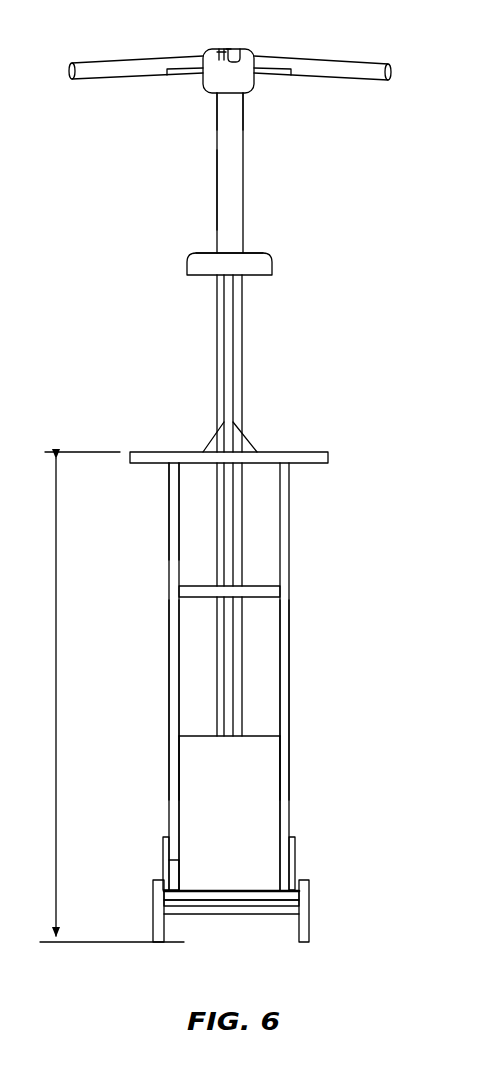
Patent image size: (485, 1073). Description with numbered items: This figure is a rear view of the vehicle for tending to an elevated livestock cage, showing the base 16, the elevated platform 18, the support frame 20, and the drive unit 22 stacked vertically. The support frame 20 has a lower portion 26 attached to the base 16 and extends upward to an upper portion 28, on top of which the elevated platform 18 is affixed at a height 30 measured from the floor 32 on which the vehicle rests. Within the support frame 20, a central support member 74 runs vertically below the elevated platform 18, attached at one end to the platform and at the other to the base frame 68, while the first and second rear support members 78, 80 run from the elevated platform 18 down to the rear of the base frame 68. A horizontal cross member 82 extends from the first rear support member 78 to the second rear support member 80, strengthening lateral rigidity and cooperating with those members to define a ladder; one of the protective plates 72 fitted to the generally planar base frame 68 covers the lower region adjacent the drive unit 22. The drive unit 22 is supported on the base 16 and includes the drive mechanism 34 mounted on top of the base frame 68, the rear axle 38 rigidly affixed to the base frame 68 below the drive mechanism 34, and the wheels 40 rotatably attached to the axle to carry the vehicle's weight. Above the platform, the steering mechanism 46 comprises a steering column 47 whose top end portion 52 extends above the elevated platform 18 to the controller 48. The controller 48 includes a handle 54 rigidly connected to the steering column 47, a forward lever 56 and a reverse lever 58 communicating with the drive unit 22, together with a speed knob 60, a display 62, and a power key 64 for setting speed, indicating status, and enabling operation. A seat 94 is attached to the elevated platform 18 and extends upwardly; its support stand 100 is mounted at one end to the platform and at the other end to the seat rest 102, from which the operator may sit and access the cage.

The base 16 is at (259, 902).
The elevated platform 18 is at (306, 452).
The support frame 20 is at (129, 665).
The drive unit 22 is at (162, 845).
The lower portion 26 is at (167, 872).
The upper portion 28 is at (167, 474).
The height 30 is at (56, 648).
The floor 32 is at (95, 941).
The drive mechanism 34 is at (296, 853).
The rear axle 38 is at (201, 915).
The wheels 40 is at (152, 897).
The steering mechanism 46 is at (214, 163).
The steering column 47 is at (214, 201).
The controller 48 is at (258, 95).
The top end portion 52 is at (216, 106).
The handle 54 is at (78, 80).
The forward lever 56 is at (276, 77).
The reverse lever 58 is at (178, 76).
The speed knob 60 is at (238, 49).
The display 62 is at (229, 48).
The power key 64 is at (220, 49).
The base frame 68 is at (230, 907).
The protective plates 72 is at (246, 827).
The central support member 74 is at (228, 693).
The first rear support member 78 is at (290, 698).
The second rear support member 80 is at (170, 711).
The horizontal cross member 82 is at (200, 598).
The seat 94 is at (270, 252).
The support stand 100 is at (228, 347).
The seat rest 102 is at (202, 253).